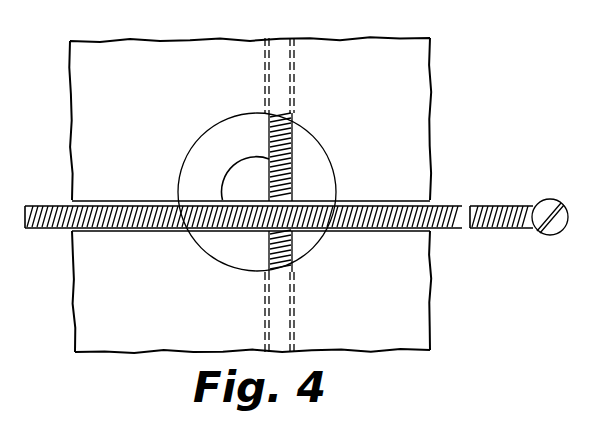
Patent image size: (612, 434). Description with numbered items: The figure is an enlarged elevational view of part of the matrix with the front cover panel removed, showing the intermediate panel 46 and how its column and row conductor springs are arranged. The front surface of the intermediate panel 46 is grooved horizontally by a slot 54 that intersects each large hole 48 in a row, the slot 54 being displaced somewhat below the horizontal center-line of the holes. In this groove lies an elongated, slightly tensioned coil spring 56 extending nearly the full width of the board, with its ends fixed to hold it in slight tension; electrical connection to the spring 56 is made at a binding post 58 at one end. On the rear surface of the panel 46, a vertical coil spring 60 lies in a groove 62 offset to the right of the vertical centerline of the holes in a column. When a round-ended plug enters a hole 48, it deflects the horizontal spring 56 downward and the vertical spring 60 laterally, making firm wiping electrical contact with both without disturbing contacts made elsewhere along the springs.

The intermediate panel 46 is at (424, 114).
The large hole 48 is at (330, 167).
The horizontal slot 54 is at (388, 201).
The coil spring 56 is at (62, 204).
The binding post 58 is at (549, 206).
The vertical coil spring 60 is at (267, 152).
The groove 62 is at (298, 58).